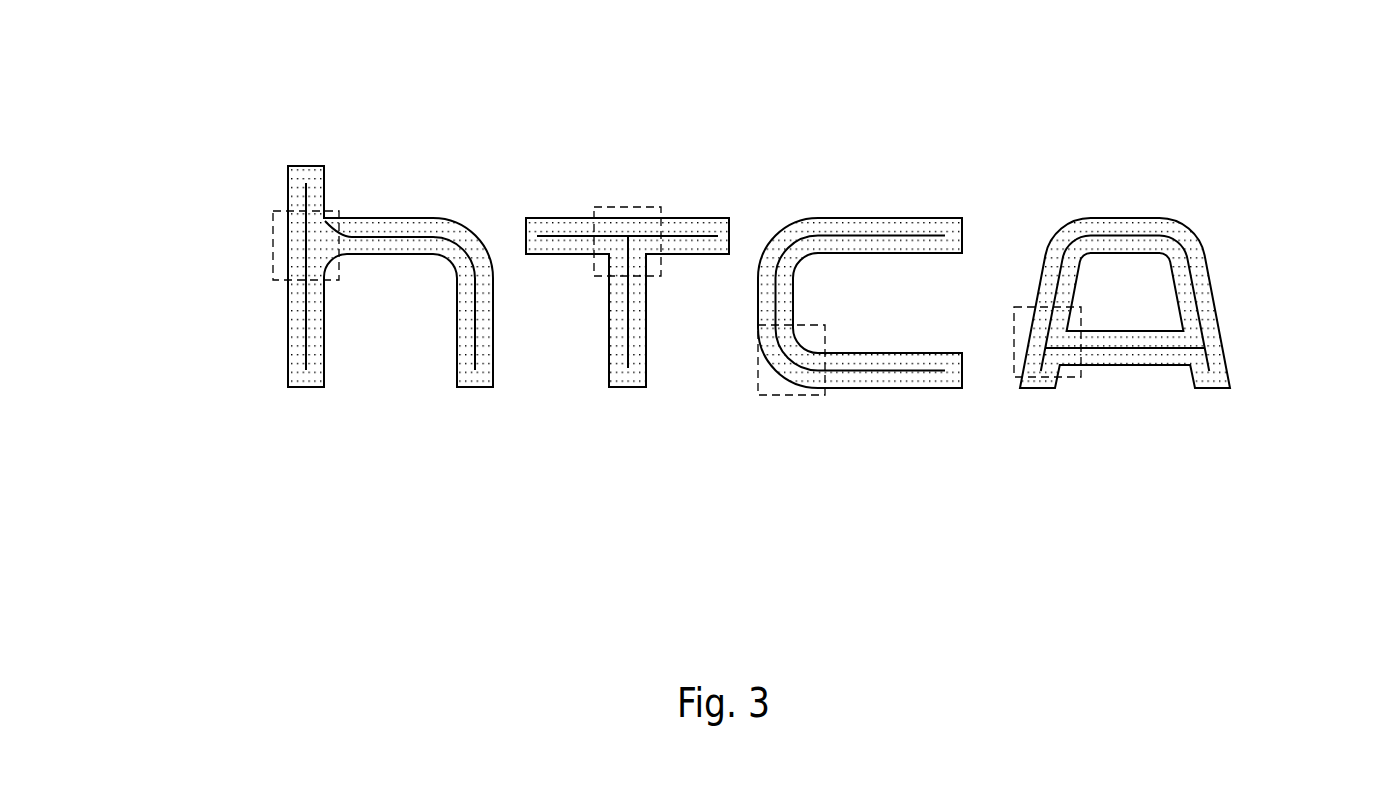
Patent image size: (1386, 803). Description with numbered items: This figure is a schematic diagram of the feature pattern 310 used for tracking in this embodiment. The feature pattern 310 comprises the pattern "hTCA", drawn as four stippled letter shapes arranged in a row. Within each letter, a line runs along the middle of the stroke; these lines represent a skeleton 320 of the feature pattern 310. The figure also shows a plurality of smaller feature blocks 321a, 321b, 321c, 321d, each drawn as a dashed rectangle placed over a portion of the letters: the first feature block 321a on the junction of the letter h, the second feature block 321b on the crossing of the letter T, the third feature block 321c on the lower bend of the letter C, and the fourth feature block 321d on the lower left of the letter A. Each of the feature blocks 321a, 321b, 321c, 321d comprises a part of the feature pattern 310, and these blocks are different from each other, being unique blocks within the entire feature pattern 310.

The feature pattern 310 is at (734, 255).
The skeleton 320 is at (1155, 352).
The feature block 321a is at (273, 228).
The feature block 321b is at (630, 205).
The feature block 321c is at (790, 397).
The feature block 321d is at (1062, 378).